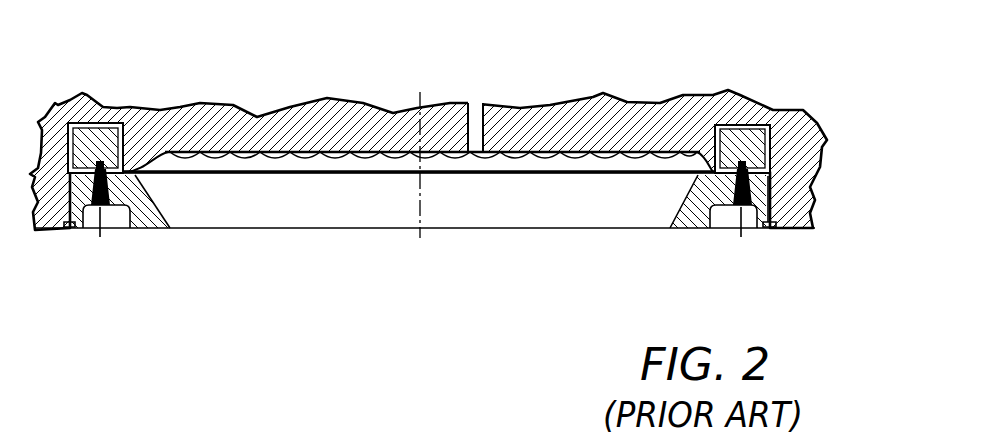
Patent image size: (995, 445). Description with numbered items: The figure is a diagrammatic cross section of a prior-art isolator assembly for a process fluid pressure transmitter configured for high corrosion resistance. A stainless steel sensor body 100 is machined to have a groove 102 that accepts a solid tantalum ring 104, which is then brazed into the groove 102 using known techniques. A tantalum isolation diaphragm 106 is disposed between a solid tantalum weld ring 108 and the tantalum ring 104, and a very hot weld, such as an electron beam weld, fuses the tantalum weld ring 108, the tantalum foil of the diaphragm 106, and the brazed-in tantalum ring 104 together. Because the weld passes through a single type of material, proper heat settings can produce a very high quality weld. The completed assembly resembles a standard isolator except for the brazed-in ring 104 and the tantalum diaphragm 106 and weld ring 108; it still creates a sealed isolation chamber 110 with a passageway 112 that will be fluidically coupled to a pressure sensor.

The sensor body 100 is at (65, 98).
The groove 102 is at (708, 150).
The tantalum ring 104 is at (773, 138).
The tantalum isolation diaphragm 106 is at (337, 170).
The tantalum weld ring 108 is at (707, 207).
The isolation chamber 110 is at (502, 163).
The passageway 112 is at (476, 177).